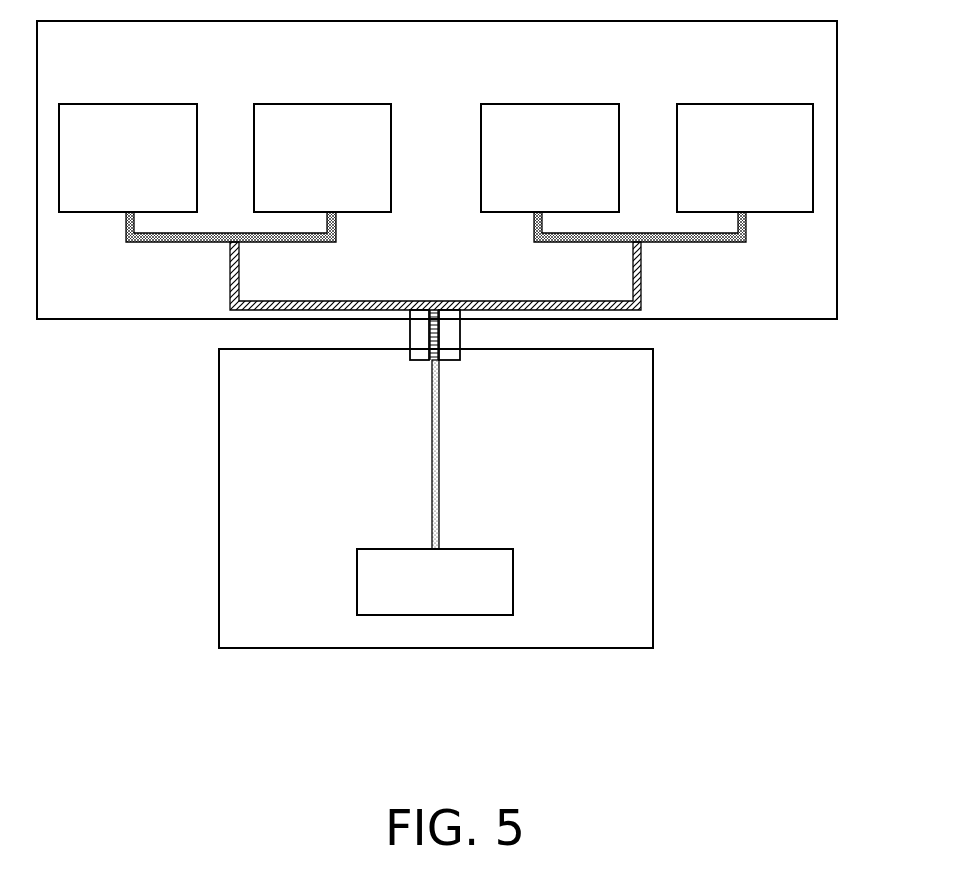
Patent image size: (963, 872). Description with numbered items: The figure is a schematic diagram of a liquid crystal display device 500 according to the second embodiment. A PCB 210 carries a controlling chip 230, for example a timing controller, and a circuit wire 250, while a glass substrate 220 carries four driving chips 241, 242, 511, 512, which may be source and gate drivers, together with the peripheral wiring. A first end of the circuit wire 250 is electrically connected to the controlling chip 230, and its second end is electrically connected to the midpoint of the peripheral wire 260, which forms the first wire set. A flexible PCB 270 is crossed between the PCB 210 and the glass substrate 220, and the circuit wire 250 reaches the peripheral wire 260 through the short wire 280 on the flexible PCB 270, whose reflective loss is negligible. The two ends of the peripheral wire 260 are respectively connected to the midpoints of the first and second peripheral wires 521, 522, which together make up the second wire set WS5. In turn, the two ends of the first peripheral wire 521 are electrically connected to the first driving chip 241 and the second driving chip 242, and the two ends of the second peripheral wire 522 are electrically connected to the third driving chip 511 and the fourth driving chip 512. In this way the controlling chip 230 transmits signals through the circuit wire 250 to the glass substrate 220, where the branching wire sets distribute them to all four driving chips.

The liquid crystal display device 500 is at (773, 683).
The PCB 210 is at (654, 477).
The glass substrate 220 is at (838, 162).
The controlling chip 230 is at (514, 576).
The first driving chip 241 is at (118, 104).
The second driving chip 242 is at (314, 104).
The third driving chip 511 is at (557, 104).
The fourth driving chip 512 is at (753, 104).
The circuit wire 250 is at (441, 452).
The peripheral wire 260 is at (642, 257).
The flexible PCB 270 is at (461, 358).
The wire 280 is at (429, 339).
The first peripheral wire 521 is at (338, 228).
The second peripheral wire 522 is at (604, 231).
The second wire set WS5 is at (436, 253).